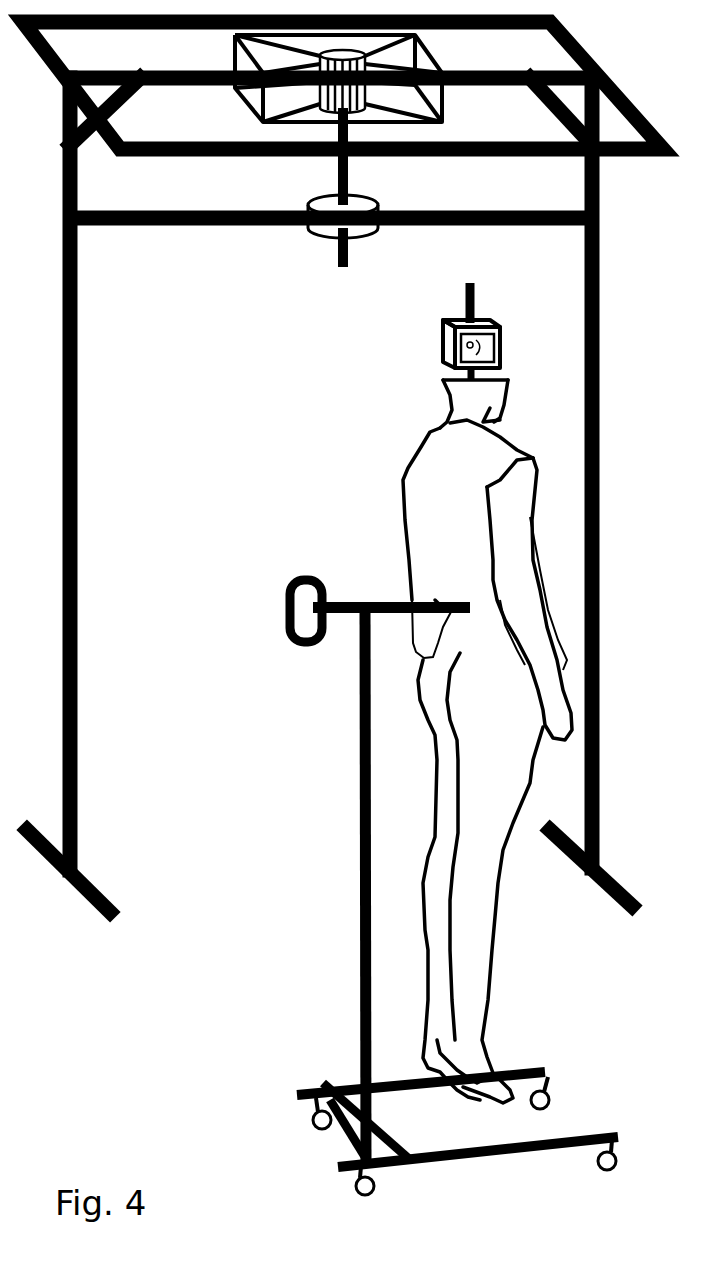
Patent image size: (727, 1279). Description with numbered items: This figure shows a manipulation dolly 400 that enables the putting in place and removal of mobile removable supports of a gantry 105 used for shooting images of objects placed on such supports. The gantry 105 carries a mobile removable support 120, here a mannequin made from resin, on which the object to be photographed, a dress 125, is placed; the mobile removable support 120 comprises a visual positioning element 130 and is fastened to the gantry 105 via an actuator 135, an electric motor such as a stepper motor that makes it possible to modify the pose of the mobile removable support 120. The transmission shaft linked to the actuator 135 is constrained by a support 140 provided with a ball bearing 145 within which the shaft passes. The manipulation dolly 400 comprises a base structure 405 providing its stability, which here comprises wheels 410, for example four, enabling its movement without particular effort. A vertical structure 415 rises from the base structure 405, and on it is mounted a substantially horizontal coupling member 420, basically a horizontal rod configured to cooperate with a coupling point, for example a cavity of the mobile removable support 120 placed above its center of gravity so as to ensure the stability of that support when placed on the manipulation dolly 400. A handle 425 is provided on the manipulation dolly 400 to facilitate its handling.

The gantry 105 is at (599, 448).
The mobile removable support 120 is at (492, 968).
The dress 125 is at (412, 483).
The visual positioning element 130 is at (443, 343).
The actuator 135 is at (230, 57).
The support 140 is at (483, 226).
The ball bearing 145 is at (318, 232).
The manipulation dolly 400 is at (414, 858).
The base structure 405 is at (470, 1160).
The casters 410 is at (558, 1093).
The vertical structure 415 is at (358, 858).
The coupling member 420 is at (400, 600).
The handle 425 is at (287, 597).